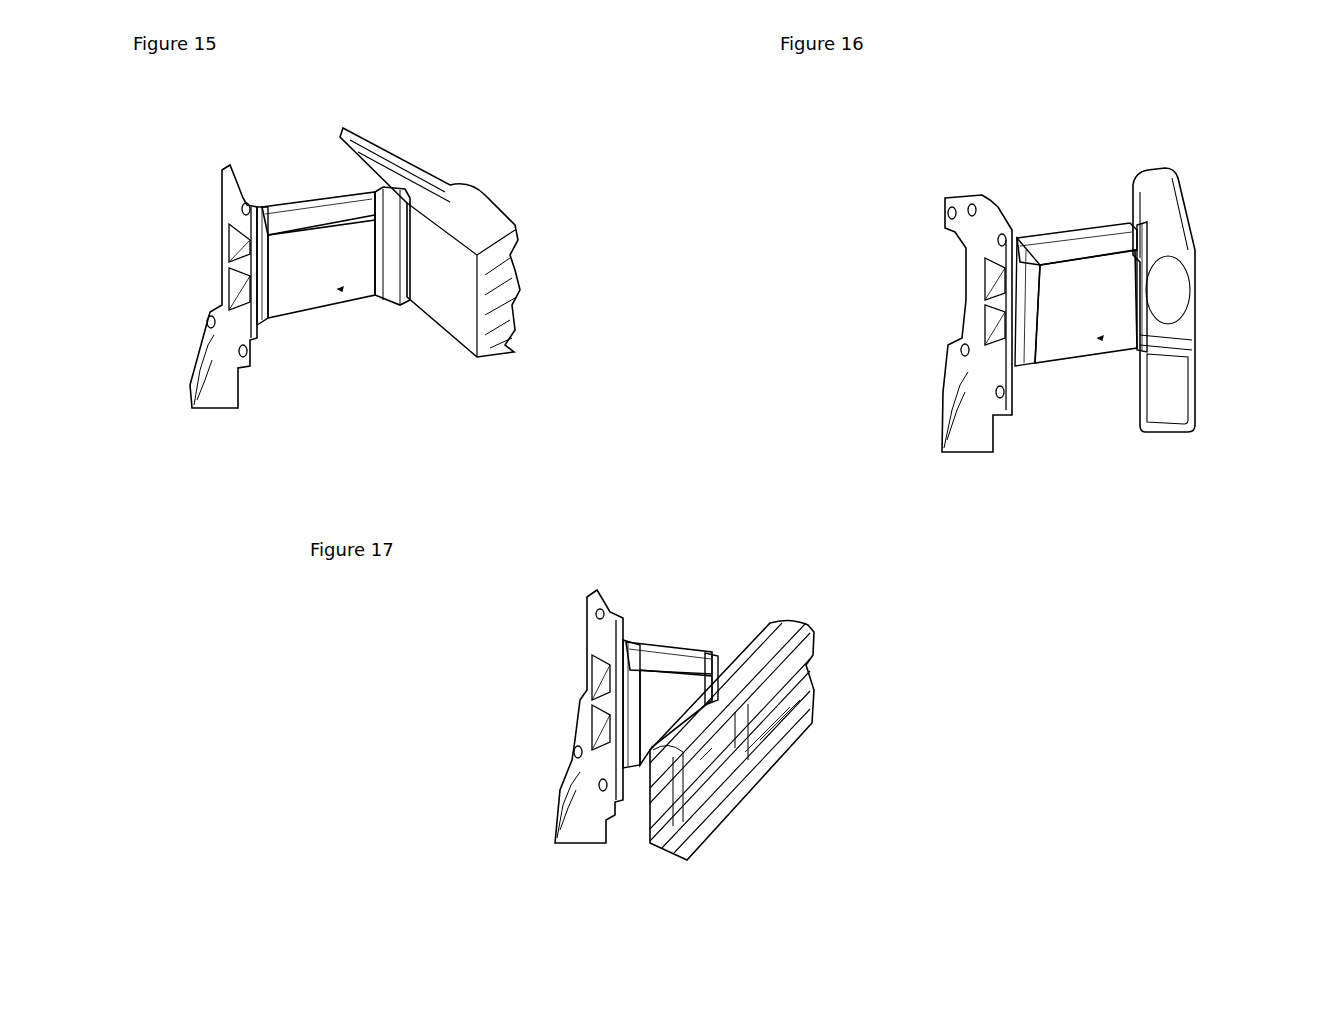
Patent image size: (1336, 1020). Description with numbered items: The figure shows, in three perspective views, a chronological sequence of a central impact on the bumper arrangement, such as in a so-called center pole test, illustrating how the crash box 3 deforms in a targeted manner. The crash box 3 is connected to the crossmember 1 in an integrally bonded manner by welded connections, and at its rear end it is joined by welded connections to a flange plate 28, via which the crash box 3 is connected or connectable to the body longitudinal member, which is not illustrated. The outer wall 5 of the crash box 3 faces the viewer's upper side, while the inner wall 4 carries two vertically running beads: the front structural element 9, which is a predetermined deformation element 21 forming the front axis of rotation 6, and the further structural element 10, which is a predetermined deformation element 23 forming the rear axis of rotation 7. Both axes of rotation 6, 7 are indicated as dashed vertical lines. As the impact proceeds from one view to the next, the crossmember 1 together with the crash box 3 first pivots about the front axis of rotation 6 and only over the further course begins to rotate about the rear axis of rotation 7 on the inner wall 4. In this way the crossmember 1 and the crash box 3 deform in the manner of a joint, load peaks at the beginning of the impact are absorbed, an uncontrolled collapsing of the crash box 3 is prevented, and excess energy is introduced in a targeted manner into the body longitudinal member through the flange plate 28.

In FIG. 15, the crossmember 1 is at (493, 218).
In FIG. 16, the crossmember 1 is at (1170, 218).
In FIG. 17, the crossmember 1 is at (783, 622).
In FIG. 15, the crash box 3 is at (318, 129).
In FIG. 16, the crash box 3 is at (1077, 153).
In FIG. 17, the crash box 3 is at (669, 551).
In FIG. 15, the inner wall 4 is at (316, 270).
In FIG. 16, the inner wall 4 is at (1070, 338).
In FIG. 17, the inner wall 4 is at (673, 692).
In FIG. 15, the outer wall 5 is at (310, 190).
In FIG. 16, the outer wall 5 is at (1053, 232).
In FIG. 17, the outer wall 5 is at (657, 647).
In FIG. 15, the front axis of rotation 6 is at (374, 415).
In FIG. 16, the front axis of rotation 6 is at (1139, 475).
In FIG. 17, the front axis of rotation 6 is at (712, 895).
In FIG. 15, the rear axis of rotation 7 is at (270, 438).
In FIG. 16, the rear axis of rotation 7 is at (1029, 495).
In FIG. 17, the rear axis of rotation 7 is at (632, 875).
In FIG. 15, the front structural element 9 is at (411, 293).
In FIG. 16, the front structural element 9 is at (1217, 333).
In FIG. 17, the front structural element 9 is at (877, 679).
In FIG. 15, the predetermined deformation element 21 is at (385, 215).
In FIG. 16, the predetermined deformation element 21 is at (1140, 280).
In FIG. 17, the predetermined deformation element 21 is at (712, 676).
In FIG. 15, the further structural element 10 is at (312, 345).
In FIG. 16, the further structural element 10 is at (1067, 394).
In FIG. 17, the further structural element 10 is at (517, 704).
In FIG. 15, the predetermined deformation element 23 is at (277, 233).
In FIG. 16, the predetermined deformation element 23 is at (1030, 298).
In FIG. 17, the predetermined deformation element 23 is at (633, 700).
In FIG. 15, the flange plate 28 is at (213, 348).
In FIG. 16, the flange plate 28 is at (982, 362).